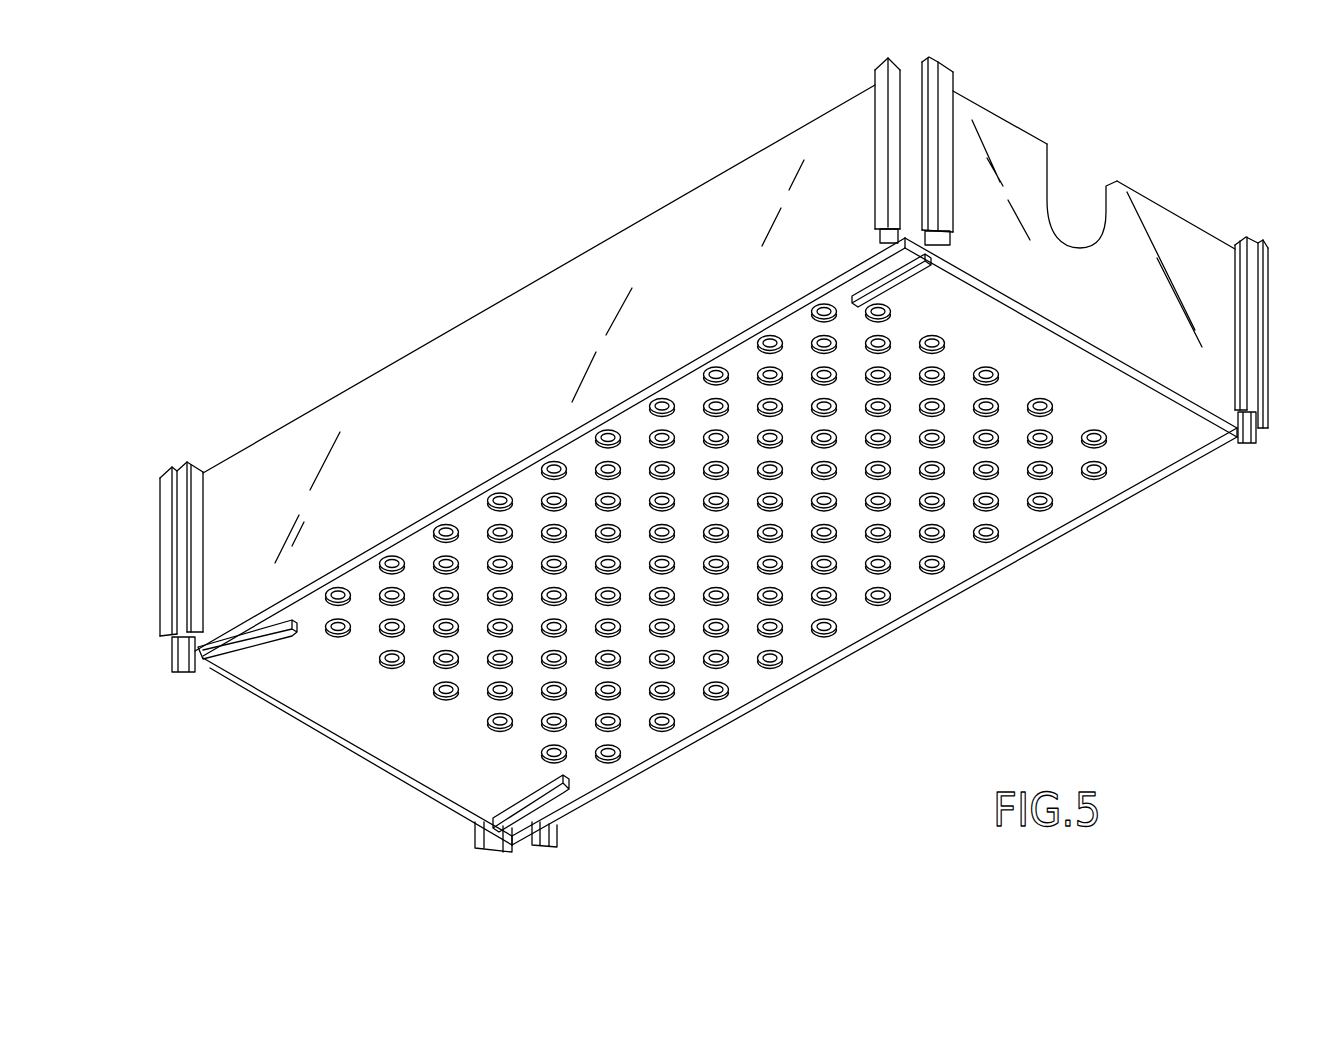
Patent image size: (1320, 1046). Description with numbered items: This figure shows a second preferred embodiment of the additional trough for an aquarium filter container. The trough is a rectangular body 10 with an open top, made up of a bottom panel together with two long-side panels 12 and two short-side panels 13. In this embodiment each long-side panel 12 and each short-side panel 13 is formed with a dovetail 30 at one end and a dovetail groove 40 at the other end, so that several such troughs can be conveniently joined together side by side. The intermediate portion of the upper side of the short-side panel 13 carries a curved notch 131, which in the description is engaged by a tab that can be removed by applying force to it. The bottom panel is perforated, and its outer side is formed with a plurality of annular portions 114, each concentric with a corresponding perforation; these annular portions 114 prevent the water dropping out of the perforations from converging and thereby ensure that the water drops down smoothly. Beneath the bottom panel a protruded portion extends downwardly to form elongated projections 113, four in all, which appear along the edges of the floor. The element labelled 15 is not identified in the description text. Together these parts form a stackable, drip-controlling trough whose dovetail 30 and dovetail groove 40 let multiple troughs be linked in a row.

The rectangular body 10 is at (322, 768).
The long-side panel 12 is at (548, 288).
The short-side panel 13 is at (1163, 226).
The curved notch 131 is at (1089, 163).
The foot 15 is at (185, 668).
The dovetail 30 is at (880, 146).
The dovetail groove 40 is at (163, 588).
The elongated projection 113 is at (258, 655).
The annular portion 114 is at (879, 610).